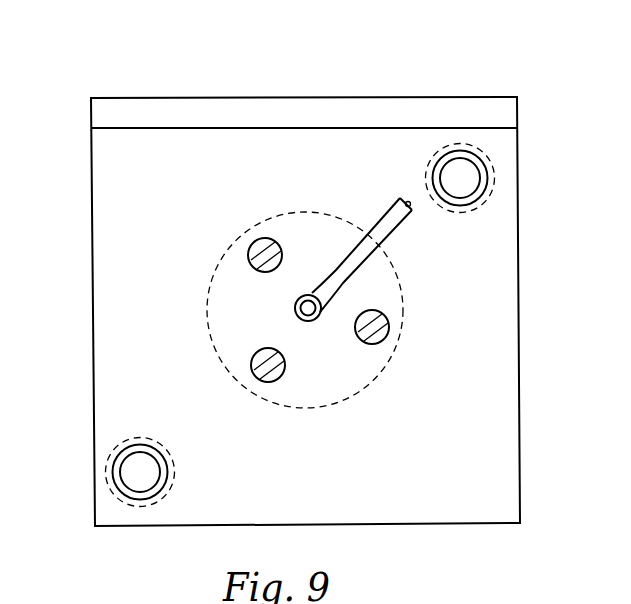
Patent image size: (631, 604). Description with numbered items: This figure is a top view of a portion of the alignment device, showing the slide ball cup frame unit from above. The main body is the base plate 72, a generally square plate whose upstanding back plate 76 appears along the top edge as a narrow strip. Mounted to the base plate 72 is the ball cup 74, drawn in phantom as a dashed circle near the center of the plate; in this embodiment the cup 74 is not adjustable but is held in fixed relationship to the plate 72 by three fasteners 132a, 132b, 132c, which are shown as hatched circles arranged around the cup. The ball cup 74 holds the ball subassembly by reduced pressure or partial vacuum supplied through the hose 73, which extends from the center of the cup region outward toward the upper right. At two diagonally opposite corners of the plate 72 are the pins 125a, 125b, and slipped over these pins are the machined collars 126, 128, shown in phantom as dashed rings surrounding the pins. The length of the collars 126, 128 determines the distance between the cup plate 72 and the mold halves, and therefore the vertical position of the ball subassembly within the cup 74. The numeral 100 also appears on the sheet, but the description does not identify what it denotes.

The base plate 72 is at (453, 472).
The back plate 76 is at (335, 110).
The pin 125a is at (467, 178).
The pin 125b is at (133, 472).
The machined collar 126 is at (510, 155).
The machined collar 128 is at (122, 445).
The ball cup 74 is at (286, 410).
The hose 73 is at (390, 218).
The fastener 132a is at (248, 253).
The fastener 132b is at (251, 358).
The fastener 132c is at (389, 340).
The assembly 100 is at (576, 597).